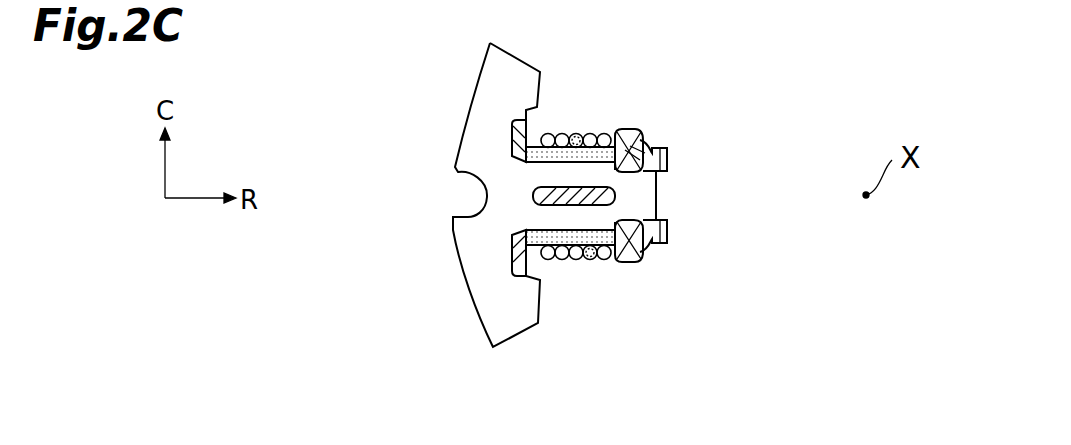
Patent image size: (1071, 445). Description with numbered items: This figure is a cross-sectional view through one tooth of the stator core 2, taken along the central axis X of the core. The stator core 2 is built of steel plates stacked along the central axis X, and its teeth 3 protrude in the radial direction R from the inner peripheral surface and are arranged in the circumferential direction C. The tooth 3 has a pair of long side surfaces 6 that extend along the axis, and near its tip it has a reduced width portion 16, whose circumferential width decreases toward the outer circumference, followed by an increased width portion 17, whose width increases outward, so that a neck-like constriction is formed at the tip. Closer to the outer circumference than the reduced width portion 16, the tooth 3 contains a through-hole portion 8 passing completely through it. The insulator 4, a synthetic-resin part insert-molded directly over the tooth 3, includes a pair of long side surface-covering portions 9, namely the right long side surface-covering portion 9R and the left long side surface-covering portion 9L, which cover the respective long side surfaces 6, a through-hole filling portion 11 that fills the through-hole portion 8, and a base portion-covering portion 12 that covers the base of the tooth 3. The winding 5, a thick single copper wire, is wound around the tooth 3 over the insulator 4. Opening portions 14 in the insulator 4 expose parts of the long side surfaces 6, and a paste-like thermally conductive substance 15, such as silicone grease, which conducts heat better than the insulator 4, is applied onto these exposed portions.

The stator core 2 is at (492, 44).
The teeth 3 is at (660, 192).
The insulator 4 is at (636, 135).
The winding 5 is at (588, 248).
The long side surfaces 6 is at (560, 133).
The through-hole portion 8 is at (535, 193).
The long side surface-covering portions 9 is at (696, 196).
The right long side surface-covering portion 9R is at (696, 105).
The left long side surface-covering portion 9L is at (688, 287).
The through-hole filling portion 11 is at (645, 206).
The base portion-covering portion 12 is at (520, 140).
The opening portions 14 is at (623, 145).
The thermally conductive substance 15 is at (588, 137).
The reduced width portion 16 is at (636, 153).
The increased width portion 17 is at (633, 152).